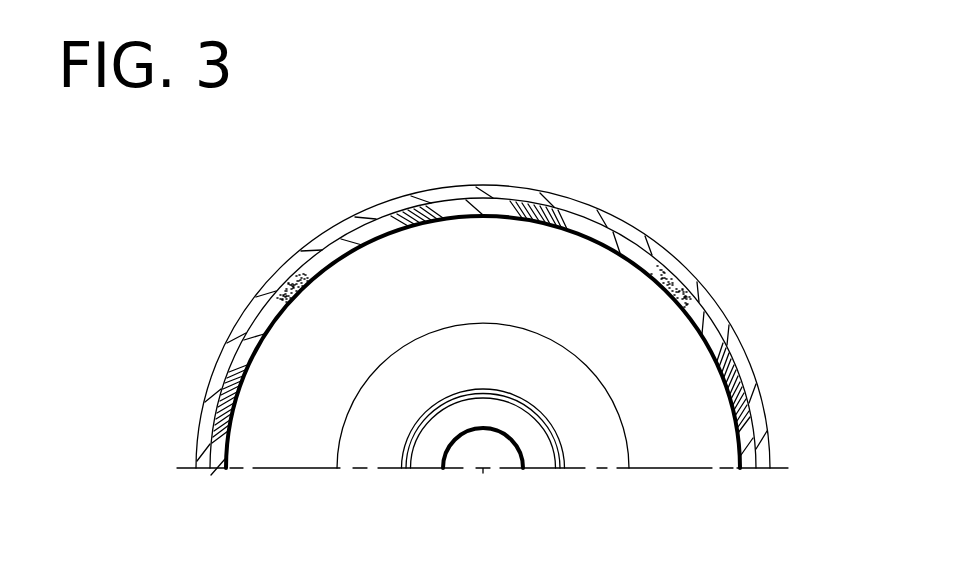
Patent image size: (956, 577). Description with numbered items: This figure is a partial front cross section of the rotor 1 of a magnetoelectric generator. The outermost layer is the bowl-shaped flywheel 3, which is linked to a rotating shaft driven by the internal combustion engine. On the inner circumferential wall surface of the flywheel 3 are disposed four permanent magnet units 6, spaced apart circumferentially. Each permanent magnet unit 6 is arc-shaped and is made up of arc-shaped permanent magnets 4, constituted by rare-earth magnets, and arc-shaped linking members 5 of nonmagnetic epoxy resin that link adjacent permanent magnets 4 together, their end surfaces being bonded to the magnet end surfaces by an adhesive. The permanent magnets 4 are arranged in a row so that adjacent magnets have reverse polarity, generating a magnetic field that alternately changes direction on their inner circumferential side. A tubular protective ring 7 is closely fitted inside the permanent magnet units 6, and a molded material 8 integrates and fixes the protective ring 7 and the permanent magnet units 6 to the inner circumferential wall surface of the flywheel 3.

The rotor 1 is at (693, 248).
The flywheel 3 is at (577, 200).
The permanent magnets 4 is at (622, 222).
The linking members 5 is at (413, 210).
The permanent magnet units 6 is at (492, 205).
The protective ring 7 is at (350, 232).
The molded material 8 is at (688, 273).